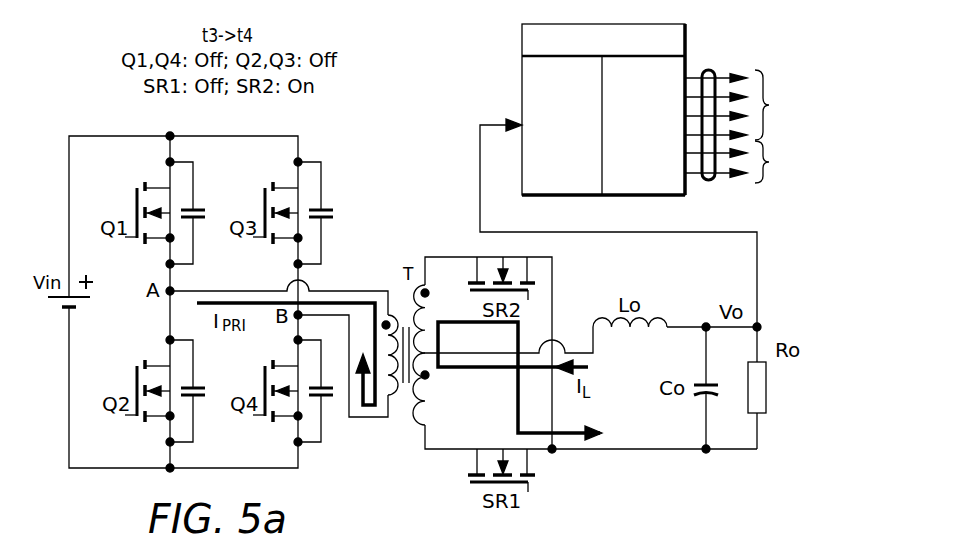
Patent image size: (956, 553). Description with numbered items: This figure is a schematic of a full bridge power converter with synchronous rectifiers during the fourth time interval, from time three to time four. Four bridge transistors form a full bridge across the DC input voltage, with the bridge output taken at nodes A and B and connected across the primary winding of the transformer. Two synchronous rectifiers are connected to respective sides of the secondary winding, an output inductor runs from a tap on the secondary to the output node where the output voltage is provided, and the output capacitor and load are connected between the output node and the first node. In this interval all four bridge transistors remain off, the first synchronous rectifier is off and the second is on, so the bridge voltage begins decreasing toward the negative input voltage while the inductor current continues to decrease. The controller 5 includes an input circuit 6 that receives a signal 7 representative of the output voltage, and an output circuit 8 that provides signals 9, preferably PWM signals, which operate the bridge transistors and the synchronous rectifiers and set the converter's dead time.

The controller 5 is at (512, 32).
The input circuit 6 is at (533, 70).
The signal representative of the converter's output voltage 7 is at (480, 155).
The output circuit 8 is at (672, 67).
The signals 9 is at (715, 185).